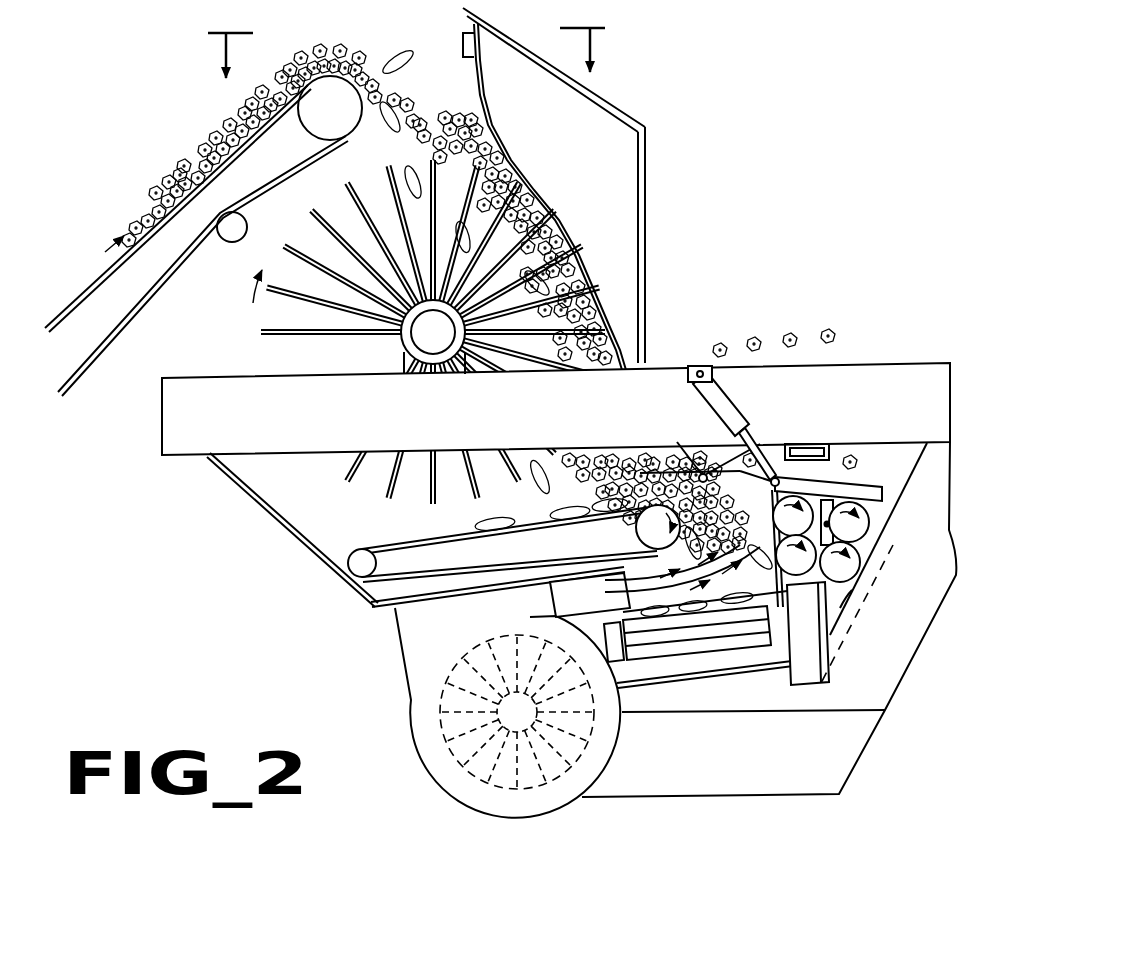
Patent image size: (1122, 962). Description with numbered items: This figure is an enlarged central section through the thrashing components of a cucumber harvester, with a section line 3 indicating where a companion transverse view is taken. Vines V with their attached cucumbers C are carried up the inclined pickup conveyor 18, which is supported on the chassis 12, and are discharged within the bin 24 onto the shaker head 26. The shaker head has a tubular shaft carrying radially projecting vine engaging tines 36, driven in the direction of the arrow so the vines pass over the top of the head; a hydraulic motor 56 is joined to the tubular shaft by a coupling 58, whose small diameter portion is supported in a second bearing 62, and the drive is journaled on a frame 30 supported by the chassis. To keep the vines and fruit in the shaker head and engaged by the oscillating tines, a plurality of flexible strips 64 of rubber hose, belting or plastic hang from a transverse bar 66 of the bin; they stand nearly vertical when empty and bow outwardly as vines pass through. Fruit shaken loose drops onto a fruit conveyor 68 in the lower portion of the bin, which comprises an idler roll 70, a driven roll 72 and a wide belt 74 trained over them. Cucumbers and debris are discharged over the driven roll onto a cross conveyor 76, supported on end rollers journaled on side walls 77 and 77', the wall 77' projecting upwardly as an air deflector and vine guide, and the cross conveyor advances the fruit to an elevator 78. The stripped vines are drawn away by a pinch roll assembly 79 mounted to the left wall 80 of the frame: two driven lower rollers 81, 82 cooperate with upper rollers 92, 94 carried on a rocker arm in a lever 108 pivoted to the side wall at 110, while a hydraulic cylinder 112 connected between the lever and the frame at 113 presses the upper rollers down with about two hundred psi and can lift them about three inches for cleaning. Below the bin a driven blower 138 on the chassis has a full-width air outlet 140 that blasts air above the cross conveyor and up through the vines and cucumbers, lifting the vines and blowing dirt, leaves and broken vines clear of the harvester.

The section line 3 is at (407, 53).
The chassis 12 is at (172, 413).
The inclined pickup conveyor 18 is at (138, 229).
The bin 24 is at (620, 110).
The shaker head 26 is at (383, 338).
The frame 30 is at (912, 363).
The vine engaging tines 36 is at (508, 176).
The hydraulic motor 56 is at (437, 336).
The coupling 58 is at (480, 348).
The second bearing 62 is at (398, 348).
The flexible strips 64 is at (487, 125).
The transverse bar 66 is at (471, 52).
The fruit conveyor 68 is at (348, 560).
The idler roll 70 is at (356, 580).
The driven roll 72 is at (636, 531).
The wide belt 74 is at (378, 605).
The cross conveyor 76 is at (627, 668).
The side wall 77 is at (507, 710).
The side wall 77' is at (709, 658).
The elevator 78 is at (885, 710).
The pinch roll assembly 79 is at (882, 462).
The left wall 80 is at (843, 652).
The lower roller 81 is at (809, 633).
The lower roller 82 is at (840, 608).
The upper roller 92 is at (832, 470).
The upper roller 94 is at (866, 542).
The lever 108 is at (762, 450).
The lever pivot 110 is at (698, 462).
The hydraulic cylinder 112 is at (720, 370).
The frame pivot 113 is at (688, 375).
The blower 138 is at (440, 698).
The air outlet 140 is at (630, 593).
The vines V is at (208, 130).
The cucumbers C is at (200, 148).